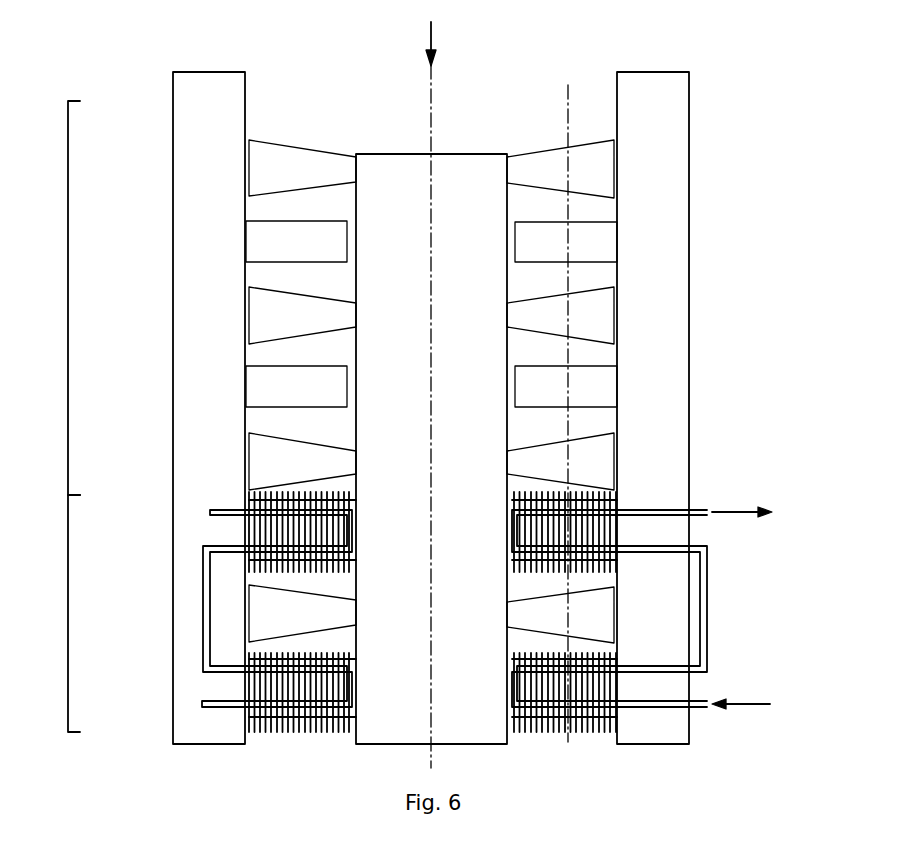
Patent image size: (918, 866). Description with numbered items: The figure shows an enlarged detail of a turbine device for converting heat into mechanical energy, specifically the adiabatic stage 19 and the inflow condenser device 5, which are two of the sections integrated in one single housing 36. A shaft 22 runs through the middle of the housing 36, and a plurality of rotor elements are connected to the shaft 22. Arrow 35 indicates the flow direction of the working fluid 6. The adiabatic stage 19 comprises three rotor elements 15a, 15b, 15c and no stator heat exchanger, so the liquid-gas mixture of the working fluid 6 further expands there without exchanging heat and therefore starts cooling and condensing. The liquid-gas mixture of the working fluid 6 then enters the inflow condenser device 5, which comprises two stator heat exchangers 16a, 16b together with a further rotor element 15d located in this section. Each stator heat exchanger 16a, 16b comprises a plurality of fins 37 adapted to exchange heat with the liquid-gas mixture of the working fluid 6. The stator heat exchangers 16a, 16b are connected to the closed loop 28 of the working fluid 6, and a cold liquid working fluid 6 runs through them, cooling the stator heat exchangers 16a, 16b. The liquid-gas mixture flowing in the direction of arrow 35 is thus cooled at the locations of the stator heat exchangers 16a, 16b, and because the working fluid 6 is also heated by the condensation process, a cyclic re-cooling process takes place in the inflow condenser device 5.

The housing 36 is at (200, 104).
The arrow 35 is at (431, 42).
The shaft 22 is at (482, 164).
The rotor element 15a is at (293, 157).
The rotor element 15b is at (257, 322).
The rotor element 15c is at (257, 467).
The rotor element 15d is at (260, 613).
The stator heat exchanger 16a is at (243, 543).
The stator heat exchanger 16b is at (243, 727).
The working fluid 6 is at (506, 608).
The closed loop 28 is at (702, 601).
The fins 37 is at (573, 731).
The adiabatic stage 19 is at (68, 298).
The inflow condenser device 5 is at (68, 613).